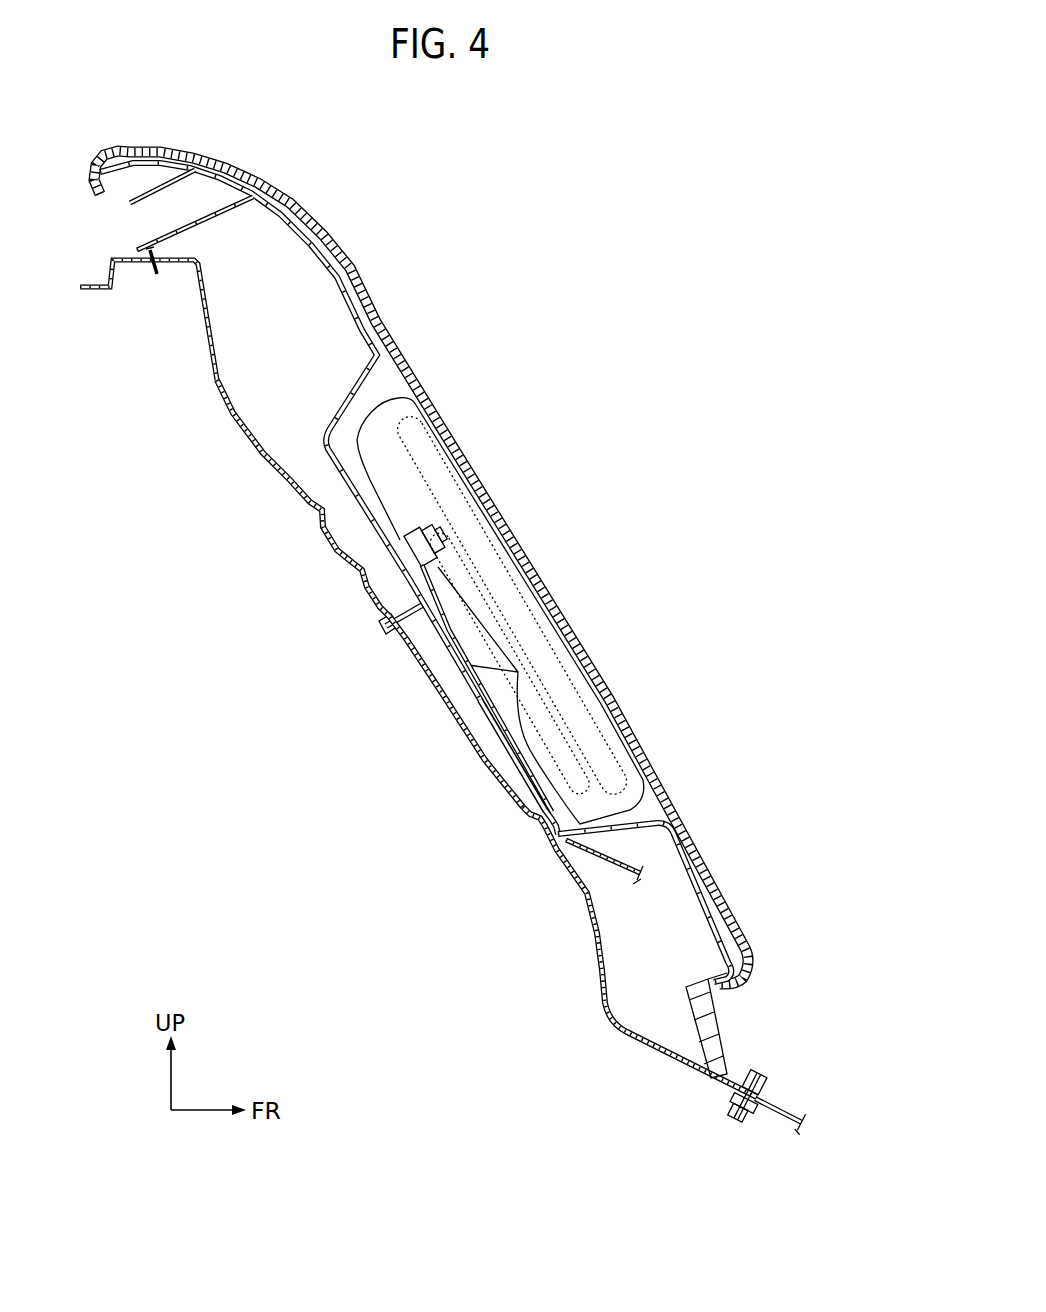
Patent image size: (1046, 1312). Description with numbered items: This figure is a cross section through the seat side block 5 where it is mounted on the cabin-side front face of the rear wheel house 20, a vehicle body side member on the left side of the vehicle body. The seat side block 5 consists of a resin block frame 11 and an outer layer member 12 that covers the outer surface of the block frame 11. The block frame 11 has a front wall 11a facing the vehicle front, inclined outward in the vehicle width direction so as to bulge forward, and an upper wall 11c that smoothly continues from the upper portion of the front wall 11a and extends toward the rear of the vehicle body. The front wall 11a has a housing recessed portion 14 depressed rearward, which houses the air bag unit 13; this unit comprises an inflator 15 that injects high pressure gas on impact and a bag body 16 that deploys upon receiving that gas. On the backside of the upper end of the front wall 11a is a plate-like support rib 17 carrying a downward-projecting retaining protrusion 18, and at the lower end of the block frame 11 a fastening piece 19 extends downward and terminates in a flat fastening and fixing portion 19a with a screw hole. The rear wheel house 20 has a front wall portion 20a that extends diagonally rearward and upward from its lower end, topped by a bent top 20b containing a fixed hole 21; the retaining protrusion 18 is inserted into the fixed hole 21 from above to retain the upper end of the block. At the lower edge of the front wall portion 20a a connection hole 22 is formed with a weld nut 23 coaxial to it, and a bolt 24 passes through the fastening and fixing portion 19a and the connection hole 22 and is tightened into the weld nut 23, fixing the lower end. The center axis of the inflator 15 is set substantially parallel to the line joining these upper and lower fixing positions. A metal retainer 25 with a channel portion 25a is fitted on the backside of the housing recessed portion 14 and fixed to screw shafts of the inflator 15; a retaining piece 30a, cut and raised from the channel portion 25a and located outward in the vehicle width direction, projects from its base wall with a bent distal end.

The seat side block 5 is at (421, 567).
The block frame 11 is at (329, 450).
The front wall 11a is at (364, 283).
The upper wall 11c is at (178, 163).
The outer layer member 12 is at (335, 238).
The air bag unit 13 is at (498, 611).
The housing recessed portion 14 is at (652, 822).
The inflator 15 is at (467, 714).
The bag body 16 is at (545, 593).
The support rib 17 is at (206, 212).
The retaining protrusion 18 is at (155, 276).
The fastening piece 19 is at (750, 1083).
The fastening and fixing portion 19a is at (768, 1120).
The rear wheel house 20 is at (408, 653).
The front wall portion 20a is at (563, 867).
The bent top 20b is at (120, 257).
The fixed hole 21 is at (150, 266).
The connection hole 22 is at (734, 1118).
The weld nut 23 is at (745, 1123).
The bolt 24 is at (755, 1077).
The retainer 25 is at (614, 869).
The channel portion 25a is at (525, 780).
The retaining piece 30a is at (403, 607).